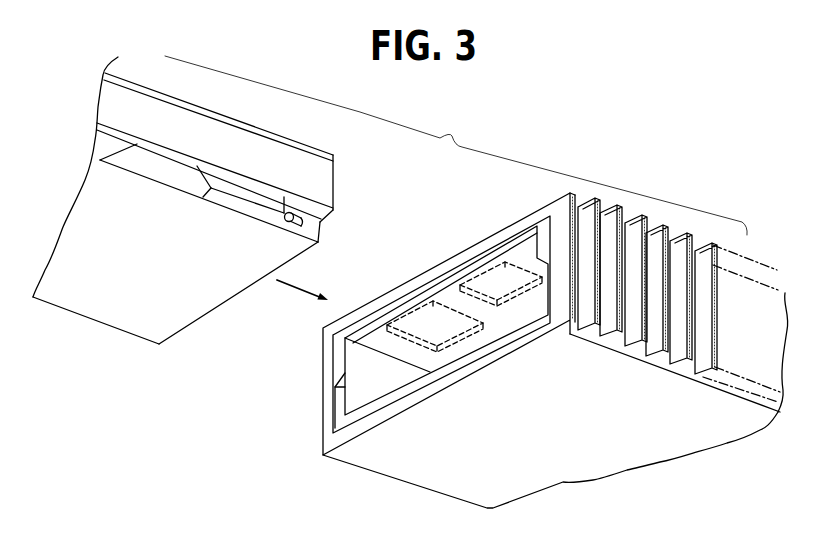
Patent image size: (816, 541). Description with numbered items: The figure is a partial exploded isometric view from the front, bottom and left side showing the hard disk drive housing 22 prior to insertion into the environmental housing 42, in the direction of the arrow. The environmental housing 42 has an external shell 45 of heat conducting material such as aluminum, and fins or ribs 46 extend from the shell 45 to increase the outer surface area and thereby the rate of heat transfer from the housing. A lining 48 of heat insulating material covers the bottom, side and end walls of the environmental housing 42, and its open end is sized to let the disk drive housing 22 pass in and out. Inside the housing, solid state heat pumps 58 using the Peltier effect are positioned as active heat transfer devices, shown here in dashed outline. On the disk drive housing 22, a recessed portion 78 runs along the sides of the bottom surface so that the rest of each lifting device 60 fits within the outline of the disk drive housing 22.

The hard disk drive housing 22 is at (130, 336).
The environmental housing 42 is at (662, 470).
The external shell 45 is at (474, 256).
The fins or ribs 46 is at (521, 219).
The lining 48 is at (360, 363).
The solid state heat pump 58 is at (435, 287).
The lifting device 60 is at (158, 176).
The recessed portion 78 is at (333, 216).